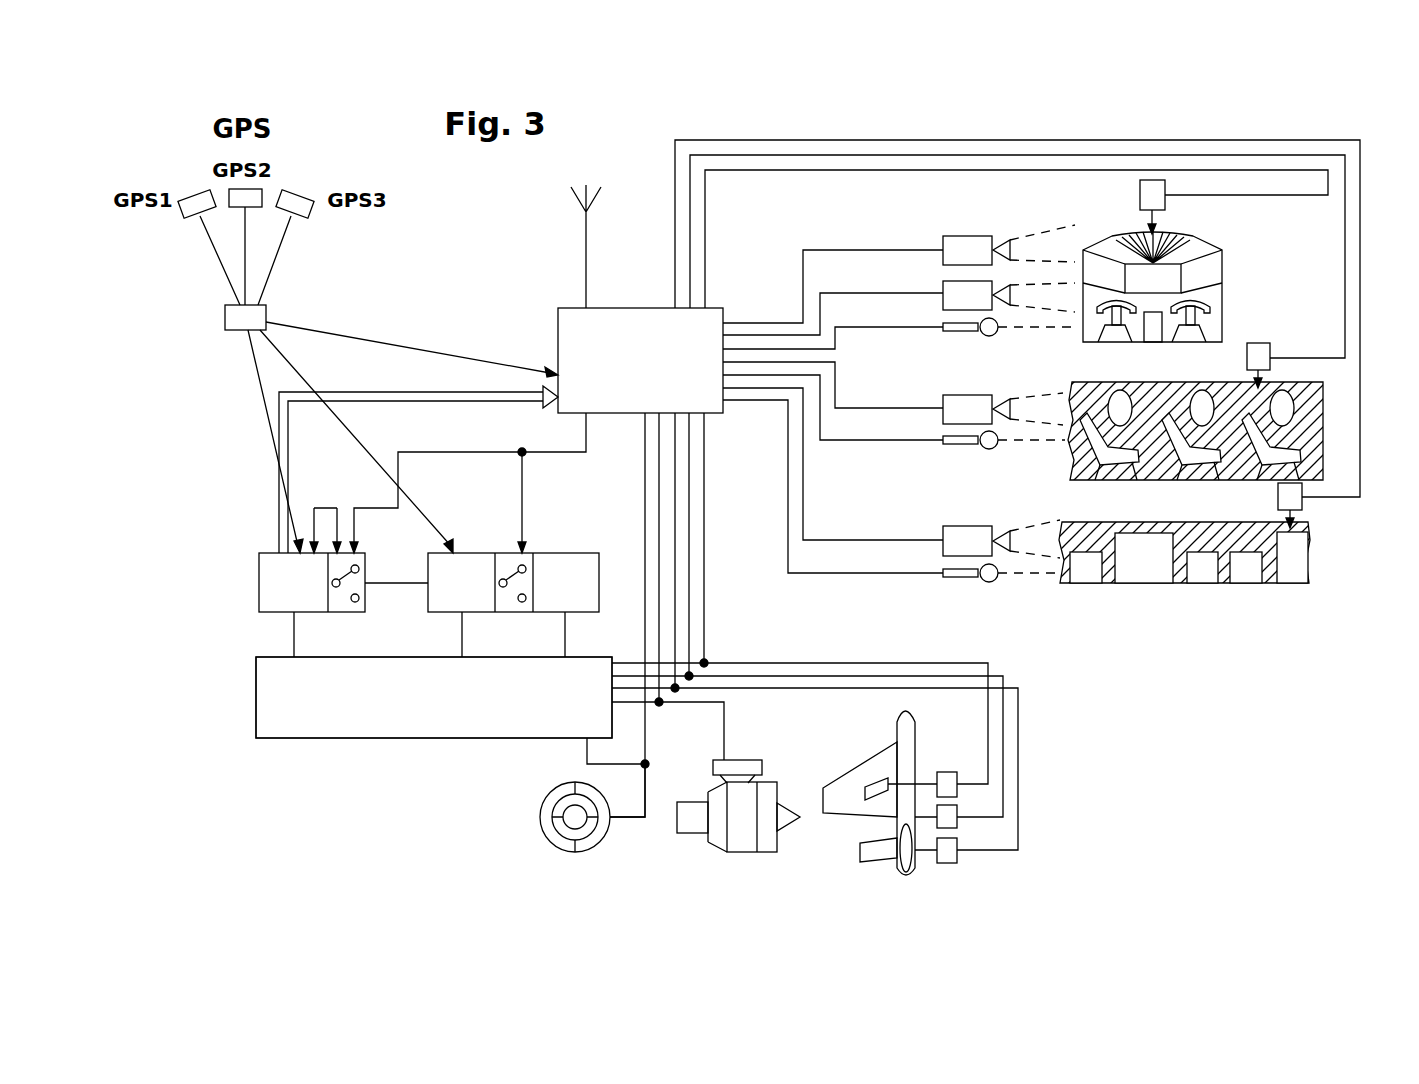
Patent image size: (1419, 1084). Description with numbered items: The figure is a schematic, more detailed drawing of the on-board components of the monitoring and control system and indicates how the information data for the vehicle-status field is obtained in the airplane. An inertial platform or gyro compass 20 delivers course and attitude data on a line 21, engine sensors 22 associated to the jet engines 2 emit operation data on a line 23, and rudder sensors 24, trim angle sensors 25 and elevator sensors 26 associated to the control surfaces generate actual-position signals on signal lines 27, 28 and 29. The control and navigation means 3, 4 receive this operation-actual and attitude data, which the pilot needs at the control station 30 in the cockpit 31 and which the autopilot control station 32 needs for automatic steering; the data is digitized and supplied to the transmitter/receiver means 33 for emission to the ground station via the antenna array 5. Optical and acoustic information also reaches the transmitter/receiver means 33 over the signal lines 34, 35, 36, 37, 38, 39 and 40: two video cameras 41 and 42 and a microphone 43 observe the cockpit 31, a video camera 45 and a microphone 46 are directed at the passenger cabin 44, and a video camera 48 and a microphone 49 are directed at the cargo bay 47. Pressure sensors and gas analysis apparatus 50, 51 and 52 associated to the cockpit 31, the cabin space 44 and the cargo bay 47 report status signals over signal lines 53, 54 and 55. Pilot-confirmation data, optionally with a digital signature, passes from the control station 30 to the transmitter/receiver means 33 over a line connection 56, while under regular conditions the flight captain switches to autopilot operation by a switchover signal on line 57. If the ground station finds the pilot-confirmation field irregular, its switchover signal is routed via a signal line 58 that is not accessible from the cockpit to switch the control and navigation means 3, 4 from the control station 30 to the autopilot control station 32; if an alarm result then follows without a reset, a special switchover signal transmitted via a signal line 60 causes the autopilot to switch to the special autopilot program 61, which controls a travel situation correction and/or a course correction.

The jet engines 2 is at (742, 835).
The control means 3 is at (256, 697).
The navigation means 4 is at (434, 697).
The antenna array 5 is at (270, 312).
The inertial platform or gyro compass 20 is at (546, 842).
The line 21 is at (623, 820).
The engine sensors 22 is at (762, 760).
The line 23 is at (724, 728).
The rudder sensors 24 is at (948, 863).
The trim angle sensors 25 is at (958, 824).
The elevator sensors 26 is at (948, 772).
The signal line 27 is at (1018, 810).
The signal line 28 is at (1003, 758).
The signal line 29 is at (988, 722).
The control station 30 is at (259, 583).
The cockpit 31 is at (1232, 262).
The autopilot control station 32 is at (478, 553).
The transmitter/receiver means 33 is at (558, 325).
The signal line 34 is at (855, 250).
The signal line 35 is at (843, 293).
The signal line 36 is at (855, 327).
The signal line 37 is at (855, 408).
The signal line 38 is at (835, 440).
The signal line 39 is at (832, 540).
The signal line 40 is at (828, 573).
The video camera 41 is at (958, 236).
The video camera 42 is at (978, 293).
The microphone 43 is at (965, 333).
The passenger cabin 44 is at (1323, 406).
The video camera 45 is at (985, 397).
The microphone 46 is at (962, 445).
The cargo bay 47 is at (1268, 583).
The video camera 48 is at (985, 530).
The microphone 49 is at (958, 578).
The pressure sensor and gas analysis apparatus 50 is at (1140, 196).
The pressure sensor and gas analysis apparatus 51 is at (1270, 343).
The pressure sensor and gas analysis apparatus 52 is at (1278, 497).
The signal line 53 is at (990, 170).
The signal line 54 is at (1055, 155).
The signal line 55 is at (1120, 140).
The line connection 56 is at (279, 488).
The line 57 is at (325, 508).
The signal line 58 is at (475, 452).
The signal line 60 is at (525, 478).
The special autopilot program 61 is at (555, 553).